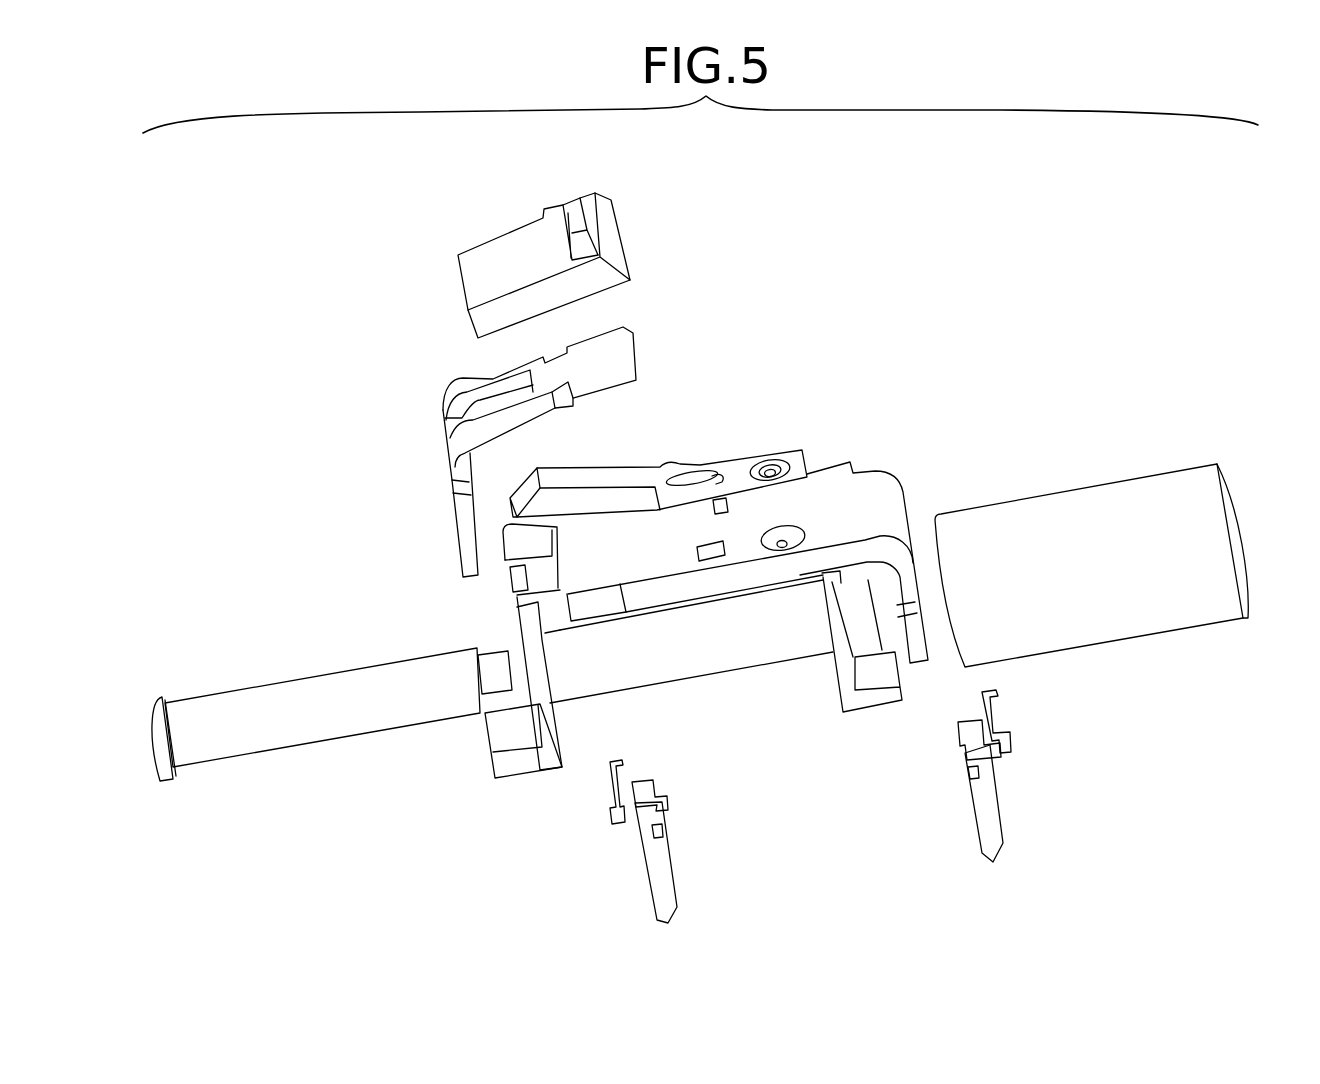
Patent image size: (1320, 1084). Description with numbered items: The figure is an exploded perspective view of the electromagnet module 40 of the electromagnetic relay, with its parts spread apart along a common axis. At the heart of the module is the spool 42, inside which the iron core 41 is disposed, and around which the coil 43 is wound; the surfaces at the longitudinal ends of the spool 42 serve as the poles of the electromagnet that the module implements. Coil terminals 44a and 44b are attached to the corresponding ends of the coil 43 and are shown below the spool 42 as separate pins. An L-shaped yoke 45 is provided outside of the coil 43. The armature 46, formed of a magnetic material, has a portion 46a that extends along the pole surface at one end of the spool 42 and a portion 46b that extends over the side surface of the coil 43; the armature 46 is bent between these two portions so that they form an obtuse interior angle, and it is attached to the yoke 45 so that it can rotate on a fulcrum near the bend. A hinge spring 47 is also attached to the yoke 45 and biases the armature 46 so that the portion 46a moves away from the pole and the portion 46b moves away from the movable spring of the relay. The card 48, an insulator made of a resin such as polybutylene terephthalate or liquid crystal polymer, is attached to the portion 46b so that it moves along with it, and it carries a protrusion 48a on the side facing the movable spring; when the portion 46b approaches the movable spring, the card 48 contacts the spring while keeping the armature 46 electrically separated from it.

The electromagnet module 40 is at (1013, 245).
The iron core 41 is at (330, 737).
The spool 42 is at (722, 673).
The coil 43 is at (1132, 640).
The coil terminal 44a is at (648, 892).
The coil terminal 44b is at (972, 837).
The yoke 45 is at (868, 487).
The armature 46 is at (355, 478).
The portion 46a is at (465, 507).
The portion 46b is at (597, 392).
The hinge spring 47 is at (737, 475).
The card 48 is at (513, 249).
The protrusion 48a is at (572, 214).